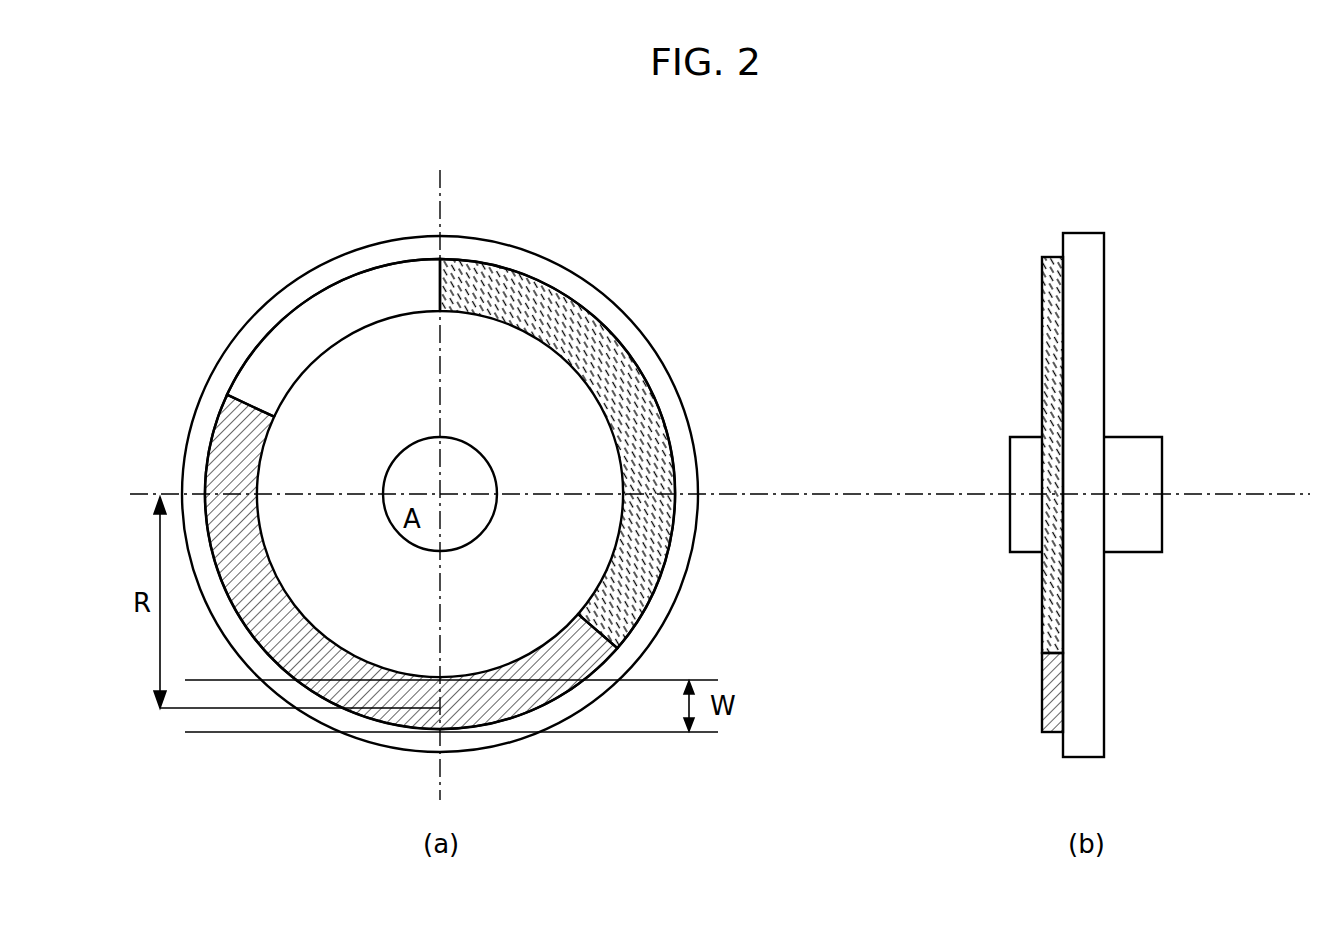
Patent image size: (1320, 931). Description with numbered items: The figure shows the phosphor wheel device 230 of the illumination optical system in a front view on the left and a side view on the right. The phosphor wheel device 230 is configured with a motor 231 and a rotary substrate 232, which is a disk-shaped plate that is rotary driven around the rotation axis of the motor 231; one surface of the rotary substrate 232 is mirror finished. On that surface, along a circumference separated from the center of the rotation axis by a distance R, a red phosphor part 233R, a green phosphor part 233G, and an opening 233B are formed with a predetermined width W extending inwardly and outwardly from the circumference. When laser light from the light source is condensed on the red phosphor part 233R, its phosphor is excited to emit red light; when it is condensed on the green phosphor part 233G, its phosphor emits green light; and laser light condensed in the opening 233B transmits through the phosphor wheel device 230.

The phosphor wheel device 230 is at (316, 190).
The motor 231 is at (490, 442).
The rotary substrate 232 is at (533, 256).
The red phosphor part 233R is at (627, 520).
The green phosphor part 233G is at (238, 440).
The opening 233B is at (287, 353).